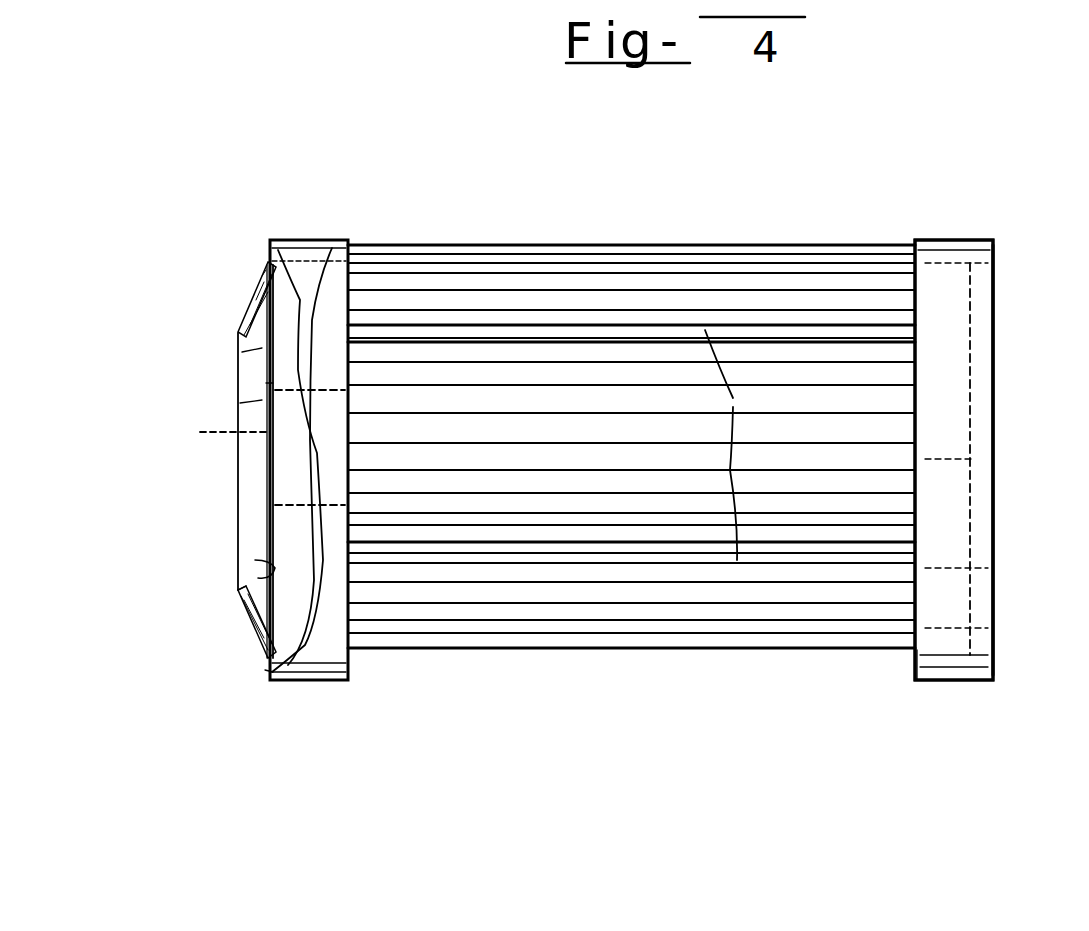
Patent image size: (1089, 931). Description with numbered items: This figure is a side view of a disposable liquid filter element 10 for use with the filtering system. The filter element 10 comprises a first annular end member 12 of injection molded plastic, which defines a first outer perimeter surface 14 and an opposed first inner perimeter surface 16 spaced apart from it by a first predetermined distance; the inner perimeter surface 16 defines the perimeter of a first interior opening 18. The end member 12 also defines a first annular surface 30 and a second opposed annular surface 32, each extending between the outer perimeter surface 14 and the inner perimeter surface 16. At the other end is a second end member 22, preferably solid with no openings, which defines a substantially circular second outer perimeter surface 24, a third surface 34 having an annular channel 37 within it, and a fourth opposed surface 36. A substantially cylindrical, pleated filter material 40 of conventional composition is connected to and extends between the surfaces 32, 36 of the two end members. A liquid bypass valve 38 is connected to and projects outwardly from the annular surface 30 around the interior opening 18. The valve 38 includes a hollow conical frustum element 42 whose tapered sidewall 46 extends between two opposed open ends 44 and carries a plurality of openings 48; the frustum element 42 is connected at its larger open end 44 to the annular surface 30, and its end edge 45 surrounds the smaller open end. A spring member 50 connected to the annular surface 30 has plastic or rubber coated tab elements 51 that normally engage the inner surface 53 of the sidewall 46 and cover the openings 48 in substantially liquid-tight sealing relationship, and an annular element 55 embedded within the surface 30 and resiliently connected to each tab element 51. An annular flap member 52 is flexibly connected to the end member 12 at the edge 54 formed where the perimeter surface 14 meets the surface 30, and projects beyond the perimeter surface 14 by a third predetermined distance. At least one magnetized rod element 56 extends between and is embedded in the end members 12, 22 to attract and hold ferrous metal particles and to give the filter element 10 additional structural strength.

The liquid filter element 10 is at (776, 704).
The first annular end member 12 is at (352, 678).
The first outer perimeter surface 14 is at (330, 238).
The first inner perimeter surface 16 is at (355, 401).
The first interior opening 18 is at (355, 460).
The second end member 22 is at (975, 250).
The second outer perimeter surface 24 is at (955, 240).
The first annular surface 30 is at (270, 252).
The second opposed annular surface 32 is at (355, 372).
The third surface 34 is at (997, 455).
The fourth opposed surface 36 is at (915, 680).
The annular channel 37 is at (973, 340).
The liquid bypass valve 38 is at (240, 336).
The pleated filter material 40 is at (505, 250).
The hollow conical frustum element 42 is at (240, 484).
The first open end 44 is at (290, 316).
The end edge 45 is at (240, 403).
The tapered sidewall 46 is at (258, 302).
The openings 48 is at (258, 318).
The spring member 50 is at (240, 594).
The tab elements 51 is at (240, 350).
The annular flap member 52 is at (290, 212).
The inner surface 53 is at (212, 436).
The edge 54 is at (270, 672).
The annular element 55 is at (255, 560).
The magnetized rod element 56 is at (744, 445).